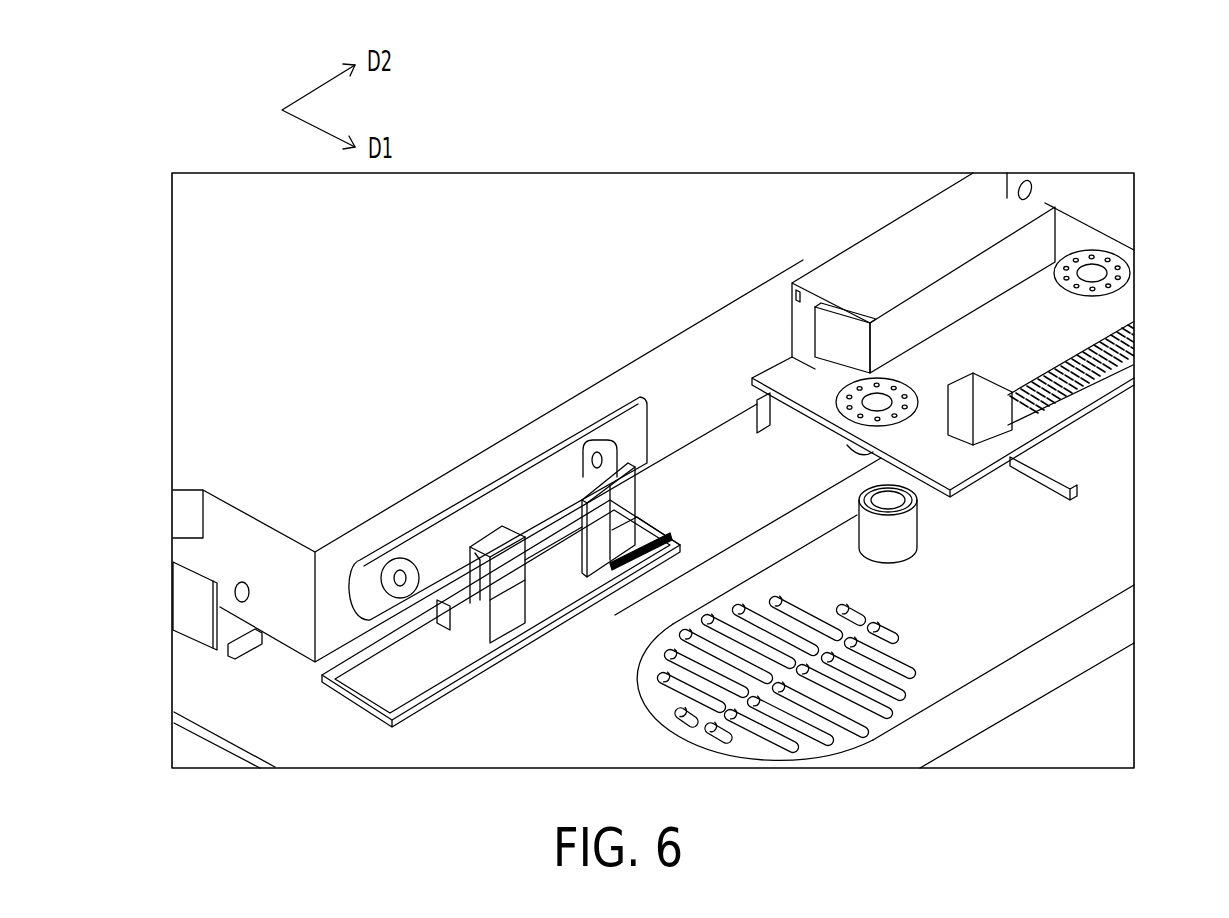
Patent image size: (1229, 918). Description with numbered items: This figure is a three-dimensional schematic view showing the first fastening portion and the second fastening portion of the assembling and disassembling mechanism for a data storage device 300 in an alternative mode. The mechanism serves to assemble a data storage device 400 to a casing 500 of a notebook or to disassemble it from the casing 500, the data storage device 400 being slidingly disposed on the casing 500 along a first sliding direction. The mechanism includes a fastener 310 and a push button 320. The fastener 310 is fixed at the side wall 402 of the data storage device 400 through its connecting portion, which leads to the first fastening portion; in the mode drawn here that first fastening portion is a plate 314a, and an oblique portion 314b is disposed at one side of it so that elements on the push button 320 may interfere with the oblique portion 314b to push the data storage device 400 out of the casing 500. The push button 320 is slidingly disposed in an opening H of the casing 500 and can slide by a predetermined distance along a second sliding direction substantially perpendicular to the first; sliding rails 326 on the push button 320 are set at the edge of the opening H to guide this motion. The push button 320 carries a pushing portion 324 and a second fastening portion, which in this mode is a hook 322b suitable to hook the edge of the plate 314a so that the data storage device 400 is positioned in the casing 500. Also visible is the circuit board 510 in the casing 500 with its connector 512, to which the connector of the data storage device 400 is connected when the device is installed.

The assembling and disassembling mechanism for a data storage device 300 is at (556, 562).
The fastener 310 is at (645, 445).
The plate 314a is at (508, 605).
The oblique portion 314b is at (545, 538).
The push button 320 is at (638, 542).
The hook 322b is at (478, 603).
The pushing portion 324 is at (597, 557).
The sliding rails 326 is at (660, 538).
The data storage device 400 is at (482, 208).
The side wall 402 is at (733, 330).
The casing 500 is at (1122, 528).
The circuit board 510 is at (1082, 237).
The connector 512 is at (984, 212).
The opening H is at (373, 662).